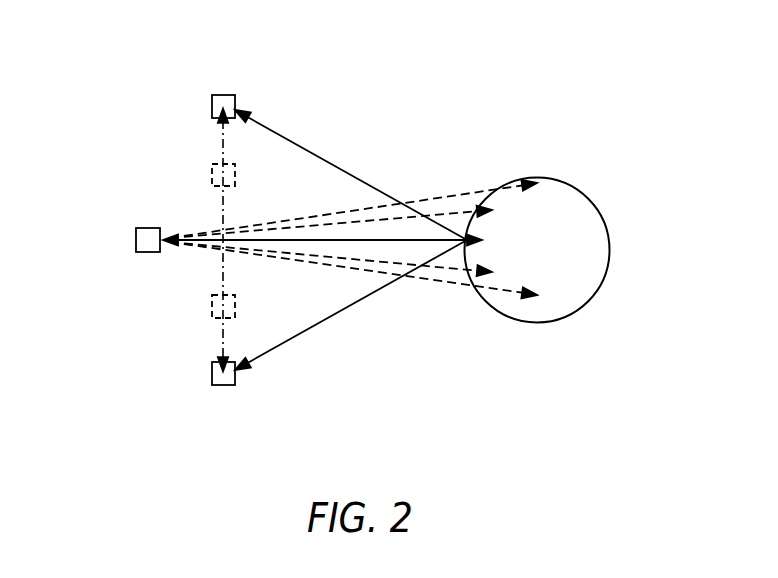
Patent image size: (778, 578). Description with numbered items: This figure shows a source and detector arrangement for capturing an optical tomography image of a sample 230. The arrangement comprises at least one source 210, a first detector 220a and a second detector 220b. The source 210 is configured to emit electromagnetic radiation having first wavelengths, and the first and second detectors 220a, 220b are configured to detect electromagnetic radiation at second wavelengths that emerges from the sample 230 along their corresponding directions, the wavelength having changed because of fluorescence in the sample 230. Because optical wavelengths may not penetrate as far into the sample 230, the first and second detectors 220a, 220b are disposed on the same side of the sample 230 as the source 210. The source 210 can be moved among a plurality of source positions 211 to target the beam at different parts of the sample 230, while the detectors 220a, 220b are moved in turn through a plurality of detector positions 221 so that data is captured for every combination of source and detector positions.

The source 210 is at (135, 240).
The source positions 211 is at (211, 242).
The first detector 220a is at (222, 95).
The second detector 220b is at (222, 385).
The detector positions 221 is at (235, 172).
The sample 230 is at (606, 223).